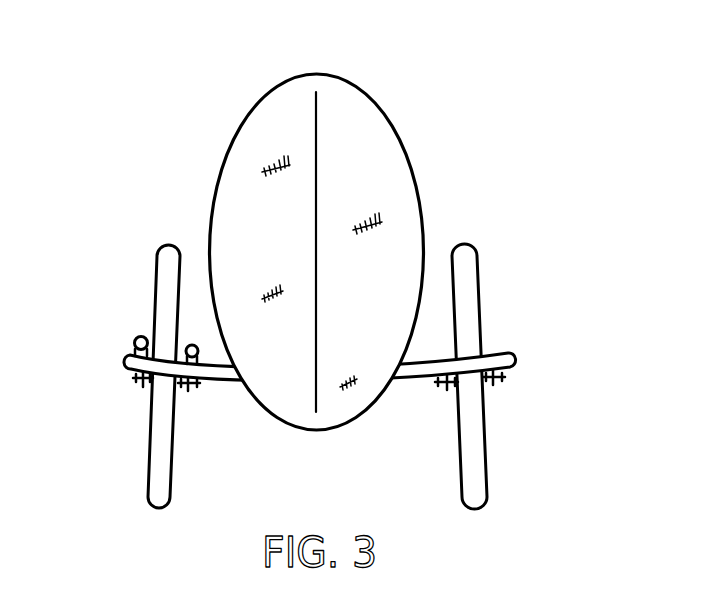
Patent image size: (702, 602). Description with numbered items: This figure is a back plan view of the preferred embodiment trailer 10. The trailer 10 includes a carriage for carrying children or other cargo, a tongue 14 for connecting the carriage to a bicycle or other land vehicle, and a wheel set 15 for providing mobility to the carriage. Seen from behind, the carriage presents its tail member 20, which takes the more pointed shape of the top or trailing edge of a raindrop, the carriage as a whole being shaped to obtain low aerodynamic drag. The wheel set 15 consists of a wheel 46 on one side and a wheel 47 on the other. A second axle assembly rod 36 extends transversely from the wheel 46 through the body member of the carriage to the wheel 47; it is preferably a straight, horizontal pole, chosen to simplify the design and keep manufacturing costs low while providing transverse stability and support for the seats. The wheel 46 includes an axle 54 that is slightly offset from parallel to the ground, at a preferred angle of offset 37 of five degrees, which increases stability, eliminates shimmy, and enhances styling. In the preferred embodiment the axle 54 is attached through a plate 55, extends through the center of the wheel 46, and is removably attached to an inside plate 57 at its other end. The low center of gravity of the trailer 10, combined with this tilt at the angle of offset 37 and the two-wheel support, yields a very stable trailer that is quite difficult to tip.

The trailer 10 is at (162, 57).
The tail member 20 is at (355, 107).
The wheel set 15 is at (509, 358).
The tongue 14 is at (132, 334).
The wheel 46 is at (168, 270).
The wheel 47 is at (468, 290).
The second axle assembly rod 36 is at (130, 364).
The angle of offset 37 is at (202, 378).
The axle 54 is at (135, 379).
The plate 55 is at (143, 387).
The inside plate 57 is at (190, 391).